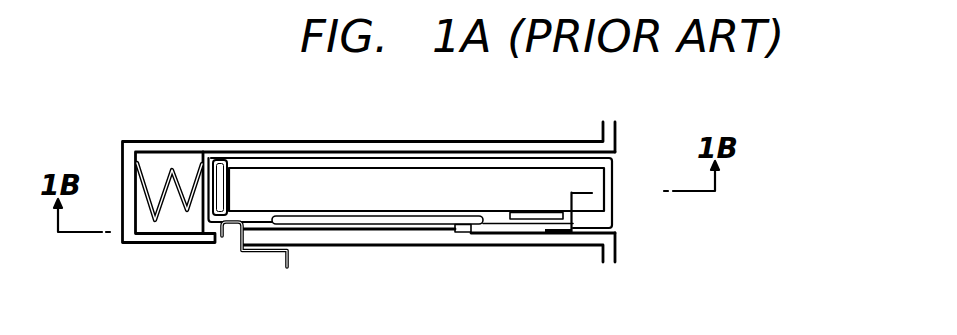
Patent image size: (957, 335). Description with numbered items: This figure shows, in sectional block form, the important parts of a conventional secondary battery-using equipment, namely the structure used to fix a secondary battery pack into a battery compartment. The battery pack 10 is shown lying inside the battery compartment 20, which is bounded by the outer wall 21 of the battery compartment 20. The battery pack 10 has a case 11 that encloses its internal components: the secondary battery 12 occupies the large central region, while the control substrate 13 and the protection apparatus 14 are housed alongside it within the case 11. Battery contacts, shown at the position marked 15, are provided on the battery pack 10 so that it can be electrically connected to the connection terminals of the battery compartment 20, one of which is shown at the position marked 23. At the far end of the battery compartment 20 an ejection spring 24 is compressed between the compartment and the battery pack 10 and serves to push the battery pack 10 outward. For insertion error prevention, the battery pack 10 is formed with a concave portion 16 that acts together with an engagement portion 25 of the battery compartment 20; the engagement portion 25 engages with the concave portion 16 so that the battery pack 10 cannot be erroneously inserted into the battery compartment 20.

The battery pack 10 is at (620, 166).
The case of the battery pack 11 is at (615, 226).
The secondary battery 12 is at (410, 185).
The control substrate 13 is at (220, 168).
The protection apparatus 14 is at (537, 218).
The frame side portion 15 is at (208, 215).
The concave portion 16 is at (362, 220).
The battery compartment 20 is at (622, 123).
The outer wall of the battery compartment 21 is at (290, 146).
The hook 23 is at (245, 253).
The ejection spring 24 is at (166, 181).
The engagement portion 25 is at (462, 235).